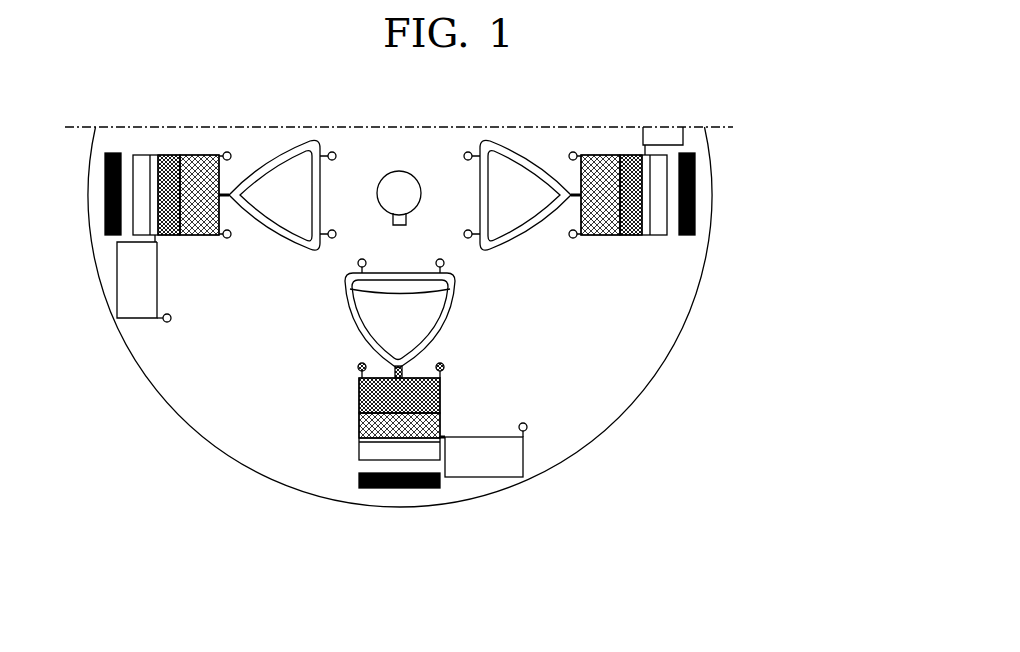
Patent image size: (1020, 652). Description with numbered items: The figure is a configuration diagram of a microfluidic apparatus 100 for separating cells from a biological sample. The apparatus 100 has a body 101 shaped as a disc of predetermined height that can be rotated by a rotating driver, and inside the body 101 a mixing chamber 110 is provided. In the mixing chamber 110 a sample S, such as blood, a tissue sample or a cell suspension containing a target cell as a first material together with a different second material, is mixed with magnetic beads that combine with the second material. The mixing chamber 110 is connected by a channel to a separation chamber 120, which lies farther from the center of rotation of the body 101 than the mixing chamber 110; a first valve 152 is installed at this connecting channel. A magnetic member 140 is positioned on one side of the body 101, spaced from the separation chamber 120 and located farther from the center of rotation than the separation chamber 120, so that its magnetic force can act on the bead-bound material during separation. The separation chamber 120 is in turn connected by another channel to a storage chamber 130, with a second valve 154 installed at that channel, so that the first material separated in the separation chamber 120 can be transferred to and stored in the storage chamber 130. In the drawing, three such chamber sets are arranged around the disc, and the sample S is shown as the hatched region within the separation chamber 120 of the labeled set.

The microfluidic apparatus 100 is at (460, 352).
The body 101 is at (702, 181).
The mixing chamber 110 is at (382, 317).
The separation chamber 120 is at (354, 470).
The storage chamber 130 is at (483, 478).
The magnetic member 140 is at (387, 490).
The first valve 152 is at (403, 370).
The second valve 154 is at (442, 438).
The sample S is at (345, 420).